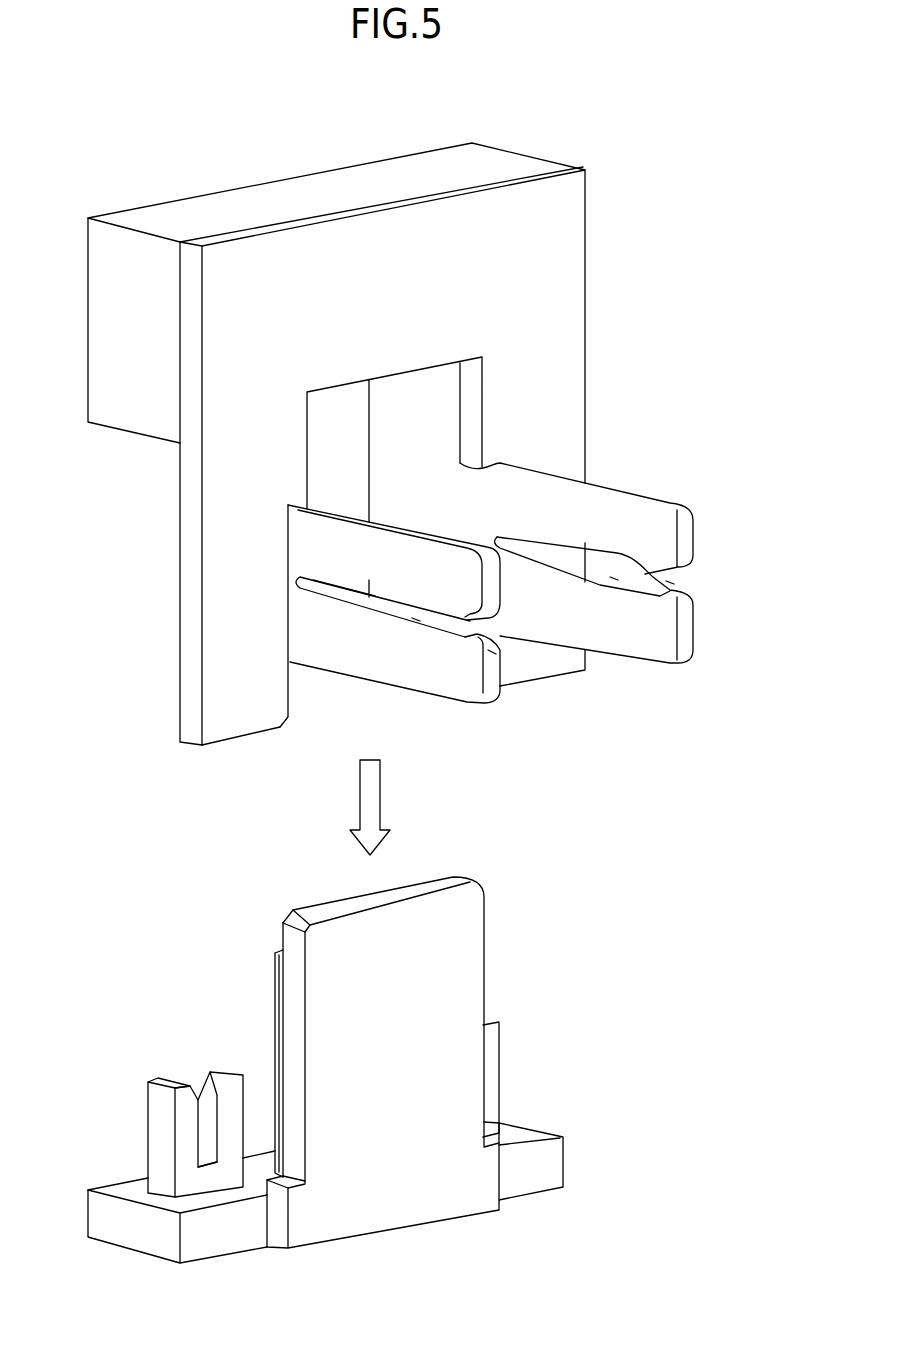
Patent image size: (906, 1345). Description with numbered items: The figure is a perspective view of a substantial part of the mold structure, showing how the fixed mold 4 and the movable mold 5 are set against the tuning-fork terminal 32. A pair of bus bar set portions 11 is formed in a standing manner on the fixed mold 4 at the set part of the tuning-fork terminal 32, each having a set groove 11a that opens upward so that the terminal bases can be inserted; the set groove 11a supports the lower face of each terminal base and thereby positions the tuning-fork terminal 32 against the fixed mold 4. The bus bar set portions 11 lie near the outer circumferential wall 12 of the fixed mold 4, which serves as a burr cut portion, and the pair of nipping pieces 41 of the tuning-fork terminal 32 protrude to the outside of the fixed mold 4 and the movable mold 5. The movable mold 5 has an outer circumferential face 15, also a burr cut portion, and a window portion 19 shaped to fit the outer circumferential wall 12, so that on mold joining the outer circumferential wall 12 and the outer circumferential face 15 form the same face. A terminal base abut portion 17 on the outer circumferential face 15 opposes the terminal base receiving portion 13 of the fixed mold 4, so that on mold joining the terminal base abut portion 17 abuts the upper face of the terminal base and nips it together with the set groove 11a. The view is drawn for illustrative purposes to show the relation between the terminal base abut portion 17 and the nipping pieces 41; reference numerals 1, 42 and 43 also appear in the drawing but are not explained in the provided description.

The connector 1 is at (698, 155).
The movable mold 5 is at (619, 343).
The outer circumferential face 15 is at (560, 273).
The terminal base abut portion 17 is at (462, 468).
The window portion 19 is at (307, 480).
The tuning-fork terminal 32 is at (627, 465).
The nipping pieces 41 is at (673, 500).
The contact piece 42 is at (613, 577).
The contact point 43 is at (670, 582).
The fixed mold 4 is at (554, 1004).
The bus bar set portion 11 is at (192, 1090).
The set groove 11a is at (210, 1145).
The outer circumferential wall 12 is at (390, 1123).
The terminal base receiving portion 13 is at (133, 1190).